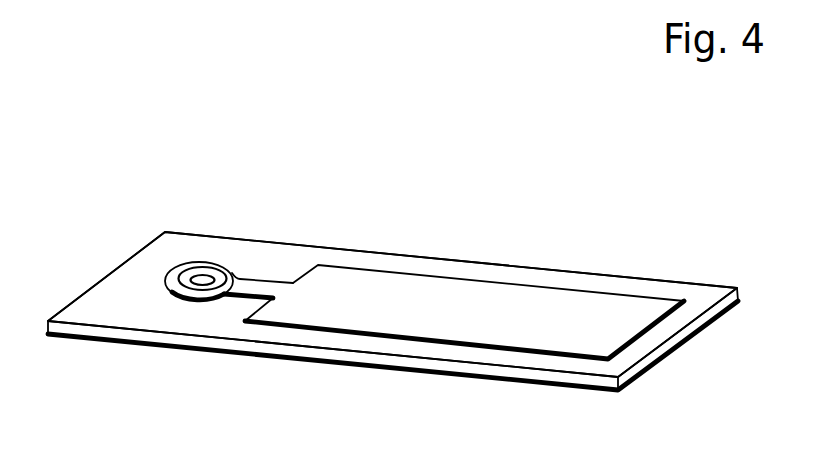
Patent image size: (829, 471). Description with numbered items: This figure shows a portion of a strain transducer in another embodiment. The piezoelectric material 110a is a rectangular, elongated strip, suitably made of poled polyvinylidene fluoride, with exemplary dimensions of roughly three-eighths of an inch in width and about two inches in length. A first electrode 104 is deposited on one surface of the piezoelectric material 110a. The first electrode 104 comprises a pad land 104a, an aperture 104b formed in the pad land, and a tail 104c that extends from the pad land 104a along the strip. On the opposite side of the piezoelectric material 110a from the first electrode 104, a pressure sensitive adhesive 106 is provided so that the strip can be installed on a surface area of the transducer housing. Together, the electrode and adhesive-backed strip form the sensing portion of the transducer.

The first electrode 104 is at (424, 306).
The pad land 104a is at (176, 270).
The aperture 104b is at (202, 278).
The tail 104c is at (687, 297).
The pressure sensitive adhesive 106 is at (548, 388).
The piezoelectric material 110a is at (97, 305).